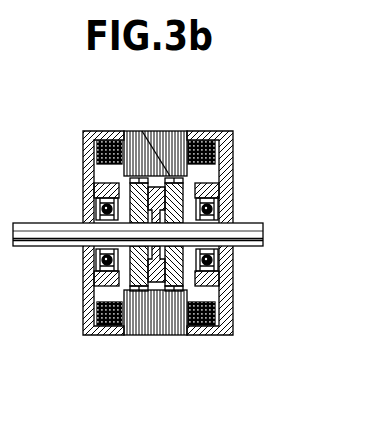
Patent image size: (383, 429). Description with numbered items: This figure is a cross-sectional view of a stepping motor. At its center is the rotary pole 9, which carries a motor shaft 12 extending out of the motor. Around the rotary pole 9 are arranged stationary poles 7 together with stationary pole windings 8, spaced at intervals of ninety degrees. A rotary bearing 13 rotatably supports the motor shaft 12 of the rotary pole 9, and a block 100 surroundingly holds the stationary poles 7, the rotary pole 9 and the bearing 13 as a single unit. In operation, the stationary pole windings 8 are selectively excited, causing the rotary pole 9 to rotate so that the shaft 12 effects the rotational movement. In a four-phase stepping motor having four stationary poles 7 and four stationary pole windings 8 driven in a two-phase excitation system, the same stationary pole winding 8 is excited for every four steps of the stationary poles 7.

The stationary pole 7 is at (170, 133).
The stationary pole winding 8 is at (102, 139).
The rotary pole 9 is at (142, 131).
The motor shaft 12 is at (266, 225).
The rotary bearing 13 is at (100, 207).
The block 100 is at (234, 283).